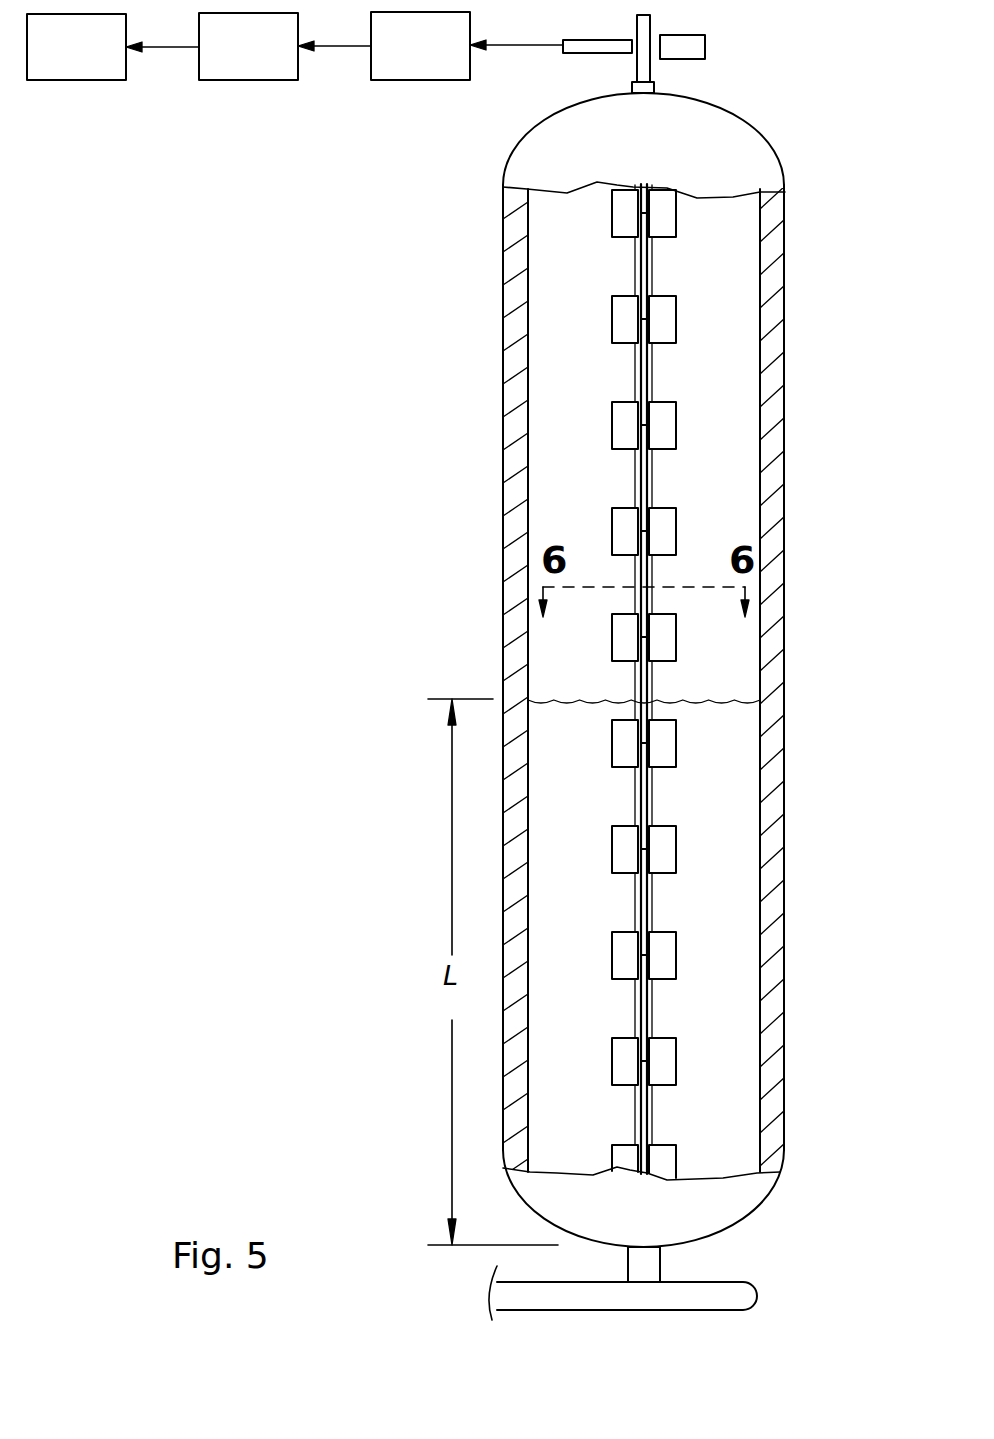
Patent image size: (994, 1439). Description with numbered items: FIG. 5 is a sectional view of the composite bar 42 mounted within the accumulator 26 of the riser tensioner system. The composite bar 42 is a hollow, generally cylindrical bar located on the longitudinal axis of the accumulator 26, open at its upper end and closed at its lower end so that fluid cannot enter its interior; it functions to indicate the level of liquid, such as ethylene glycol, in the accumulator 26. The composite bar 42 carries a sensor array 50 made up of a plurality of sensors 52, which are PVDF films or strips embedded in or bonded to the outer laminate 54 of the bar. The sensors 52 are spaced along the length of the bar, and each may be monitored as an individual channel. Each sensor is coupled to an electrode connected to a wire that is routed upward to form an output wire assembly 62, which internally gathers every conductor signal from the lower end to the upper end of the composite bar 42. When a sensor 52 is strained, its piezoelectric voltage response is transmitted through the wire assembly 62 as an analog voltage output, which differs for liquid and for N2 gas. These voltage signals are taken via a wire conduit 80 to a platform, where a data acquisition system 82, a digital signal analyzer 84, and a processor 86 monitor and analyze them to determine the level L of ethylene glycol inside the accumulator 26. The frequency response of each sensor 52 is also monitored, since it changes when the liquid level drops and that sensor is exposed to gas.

The accumulator 26 is at (784, 665).
The composite bar 42 is at (642, 681).
The sensor array 50 is at (676, 952).
The sensors 52 is at (676, 427).
The outer laminate 54 is at (633, 790).
The output wire assembly 62 is at (653, 905).
The wire conduit 80 is at (528, 46).
The data acquisition system 82 is at (417, 80).
The digital signal analyzer 84 is at (244, 82).
The processor 86 is at (90, 82).